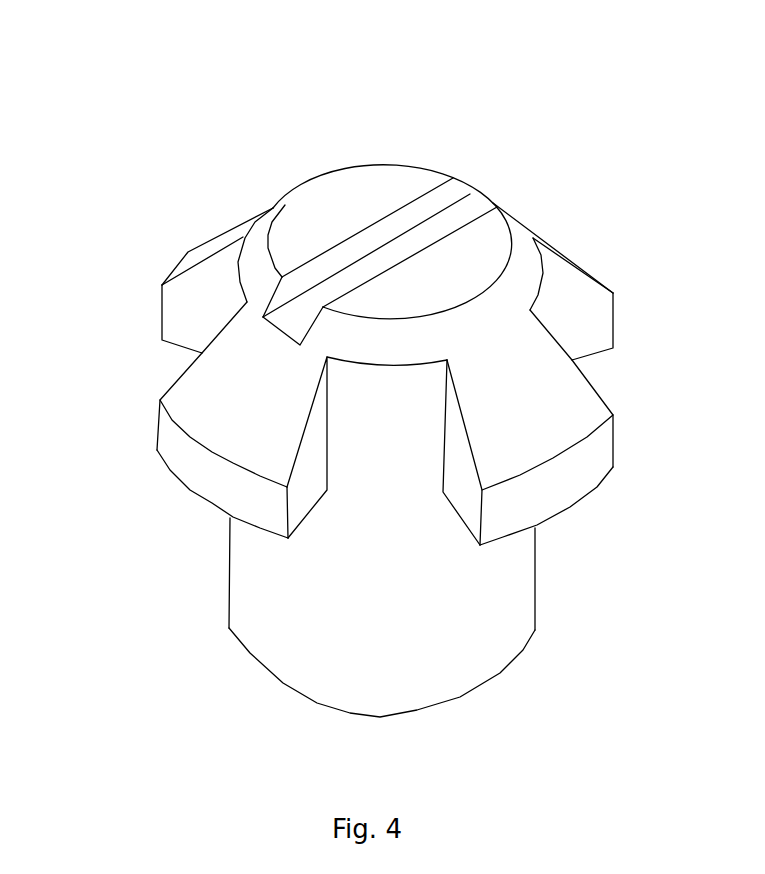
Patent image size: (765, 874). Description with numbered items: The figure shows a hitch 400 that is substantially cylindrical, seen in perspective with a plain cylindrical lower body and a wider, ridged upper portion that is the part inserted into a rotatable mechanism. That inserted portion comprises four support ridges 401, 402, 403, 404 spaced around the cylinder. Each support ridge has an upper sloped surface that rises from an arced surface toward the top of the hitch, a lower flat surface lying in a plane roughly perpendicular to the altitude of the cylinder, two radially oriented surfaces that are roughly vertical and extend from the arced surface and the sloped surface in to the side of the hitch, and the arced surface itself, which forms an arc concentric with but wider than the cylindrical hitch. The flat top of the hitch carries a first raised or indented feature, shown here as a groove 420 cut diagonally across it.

The hitch 400 is at (366, 367).
The support ridge 401 is at (575, 470).
The support ridge 402 is at (595, 273).
The support ridge 403 is at (185, 303).
The support ridge 404 is at (210, 423).
The groove 420 is at (448, 221).